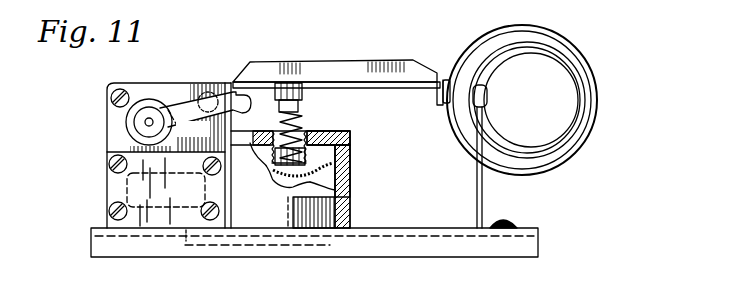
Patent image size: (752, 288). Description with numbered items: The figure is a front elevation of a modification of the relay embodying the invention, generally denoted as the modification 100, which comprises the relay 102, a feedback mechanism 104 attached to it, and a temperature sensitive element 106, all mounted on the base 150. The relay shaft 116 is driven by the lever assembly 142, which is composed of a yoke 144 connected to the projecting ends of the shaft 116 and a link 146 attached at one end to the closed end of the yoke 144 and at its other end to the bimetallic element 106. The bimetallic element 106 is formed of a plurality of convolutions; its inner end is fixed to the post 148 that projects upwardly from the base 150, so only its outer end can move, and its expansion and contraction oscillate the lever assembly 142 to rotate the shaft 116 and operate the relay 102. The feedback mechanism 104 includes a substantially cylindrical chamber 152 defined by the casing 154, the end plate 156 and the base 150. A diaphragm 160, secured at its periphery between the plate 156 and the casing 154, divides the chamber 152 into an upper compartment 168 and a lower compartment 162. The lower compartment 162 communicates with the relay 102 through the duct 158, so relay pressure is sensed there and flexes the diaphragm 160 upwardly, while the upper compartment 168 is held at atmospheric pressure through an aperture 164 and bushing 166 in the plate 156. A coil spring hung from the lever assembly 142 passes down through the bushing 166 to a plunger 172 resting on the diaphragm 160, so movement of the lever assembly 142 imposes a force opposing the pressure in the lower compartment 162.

The relay modification 100 is at (98, 127).
The relay 102 is at (99, 152).
The feedback mechanism 104 is at (360, 210).
The temperature sensitive element 106 is at (596, 115).
The shaft 116 is at (145, 119).
The lever assembly 142 is at (336, 88).
The yoke 144 is at (183, 97).
The link 146 is at (345, 78).
The post 148 is at (484, 195).
The base 150 is at (515, 258).
The cylindrical chamber 152 is at (322, 190).
The casing 154 is at (352, 173).
The end plate 156 is at (352, 136).
The duct 158 is at (228, 245).
The diaphragm 160 is at (287, 178).
The lower compartment 162 is at (337, 222).
The aperture 164 is at (273, 137).
The bushing 166 is at (301, 130).
The upper compartment 168 is at (327, 155).
The plunger 172 is at (273, 172).